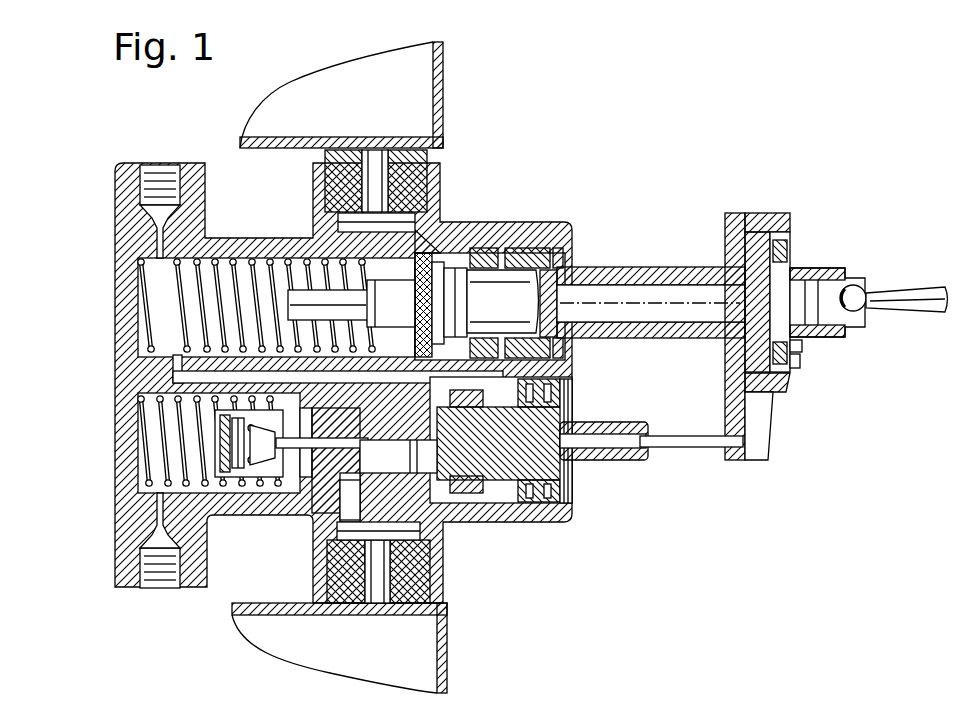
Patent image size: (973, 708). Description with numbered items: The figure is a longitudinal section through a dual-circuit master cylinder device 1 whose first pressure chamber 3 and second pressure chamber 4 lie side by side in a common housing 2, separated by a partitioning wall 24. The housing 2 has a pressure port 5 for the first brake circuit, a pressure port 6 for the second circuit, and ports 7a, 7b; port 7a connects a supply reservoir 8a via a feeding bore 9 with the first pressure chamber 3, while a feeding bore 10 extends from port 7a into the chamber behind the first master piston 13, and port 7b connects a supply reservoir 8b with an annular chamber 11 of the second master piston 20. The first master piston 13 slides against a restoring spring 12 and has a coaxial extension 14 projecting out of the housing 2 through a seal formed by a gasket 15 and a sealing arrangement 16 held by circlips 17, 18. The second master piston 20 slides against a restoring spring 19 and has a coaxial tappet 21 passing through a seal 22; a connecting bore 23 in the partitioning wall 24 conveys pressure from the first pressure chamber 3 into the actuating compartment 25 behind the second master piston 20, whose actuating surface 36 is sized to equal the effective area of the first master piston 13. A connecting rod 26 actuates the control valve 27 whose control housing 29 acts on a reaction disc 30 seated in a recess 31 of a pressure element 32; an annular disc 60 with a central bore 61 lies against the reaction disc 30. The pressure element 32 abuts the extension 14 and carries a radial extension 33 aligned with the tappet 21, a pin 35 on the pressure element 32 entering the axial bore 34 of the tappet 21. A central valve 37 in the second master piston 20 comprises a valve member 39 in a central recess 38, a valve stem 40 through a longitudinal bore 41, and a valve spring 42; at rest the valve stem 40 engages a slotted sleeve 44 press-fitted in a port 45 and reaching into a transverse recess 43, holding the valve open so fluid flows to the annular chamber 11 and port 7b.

The dual-circuit master cylinder device 1 is at (462, 160).
The housing 2 is at (125, 350).
The first pressure chamber 3 is at (165, 292).
The second pressure chamber 4 is at (155, 428).
The pressure port 5 is at (158, 180).
The pressure port 6 is at (160, 590).
The port 7a is at (375, 160).
The port 7b is at (405, 566).
The supply reservoir 8a is at (420, 85).
The supply reservoir 8b is at (420, 655).
The feeding bore 9 is at (385, 240).
The feeding bore 10 is at (428, 236).
The annular chamber 11 is at (430, 492).
The restoring spring 12 is at (229, 258).
The first master piston 13 is at (426, 256).
The extension 14 is at (512, 300).
The gasket 15 is at (440, 264).
The sealing arrangement 16 is at (488, 250).
The circlip 17 is at (458, 266).
The circlip 18 is at (535, 252).
The restoring spring 19 is at (160, 470).
The second master piston 20 is at (565, 410).
The tappet 21 is at (617, 440).
The seal 22 is at (566, 505).
The connecting bore 23 is at (175, 372).
The partitioning wall 24 is at (195, 387).
The actuating compartment 25 is at (520, 505).
The connecting rod 26 is at (930, 298).
The control valve 27 is at (862, 258).
The control housing 29 is at (800, 263).
The reaction disc 30 is at (748, 252).
The recess 31 is at (792, 240).
The pressure element 32 is at (735, 228).
The extension 33 is at (732, 423).
The axial bore 34 is at (612, 445).
The pin 35 is at (692, 440).
The actuating surface 36 is at (525, 505).
The central valve 37 is at (250, 480).
The central recess 38 is at (238, 472).
The valve member 39 is at (262, 470).
The valve stem 40 is at (300, 470).
The longitudinal bore 41 is at (276, 470).
The valve spring 42 is at (188, 496).
The recess 43 is at (385, 475).
The sleeve 44 is at (352, 490).
The port 45 is at (345, 545).
The annular disc 60 is at (795, 366).
The central bore 61 is at (805, 340).